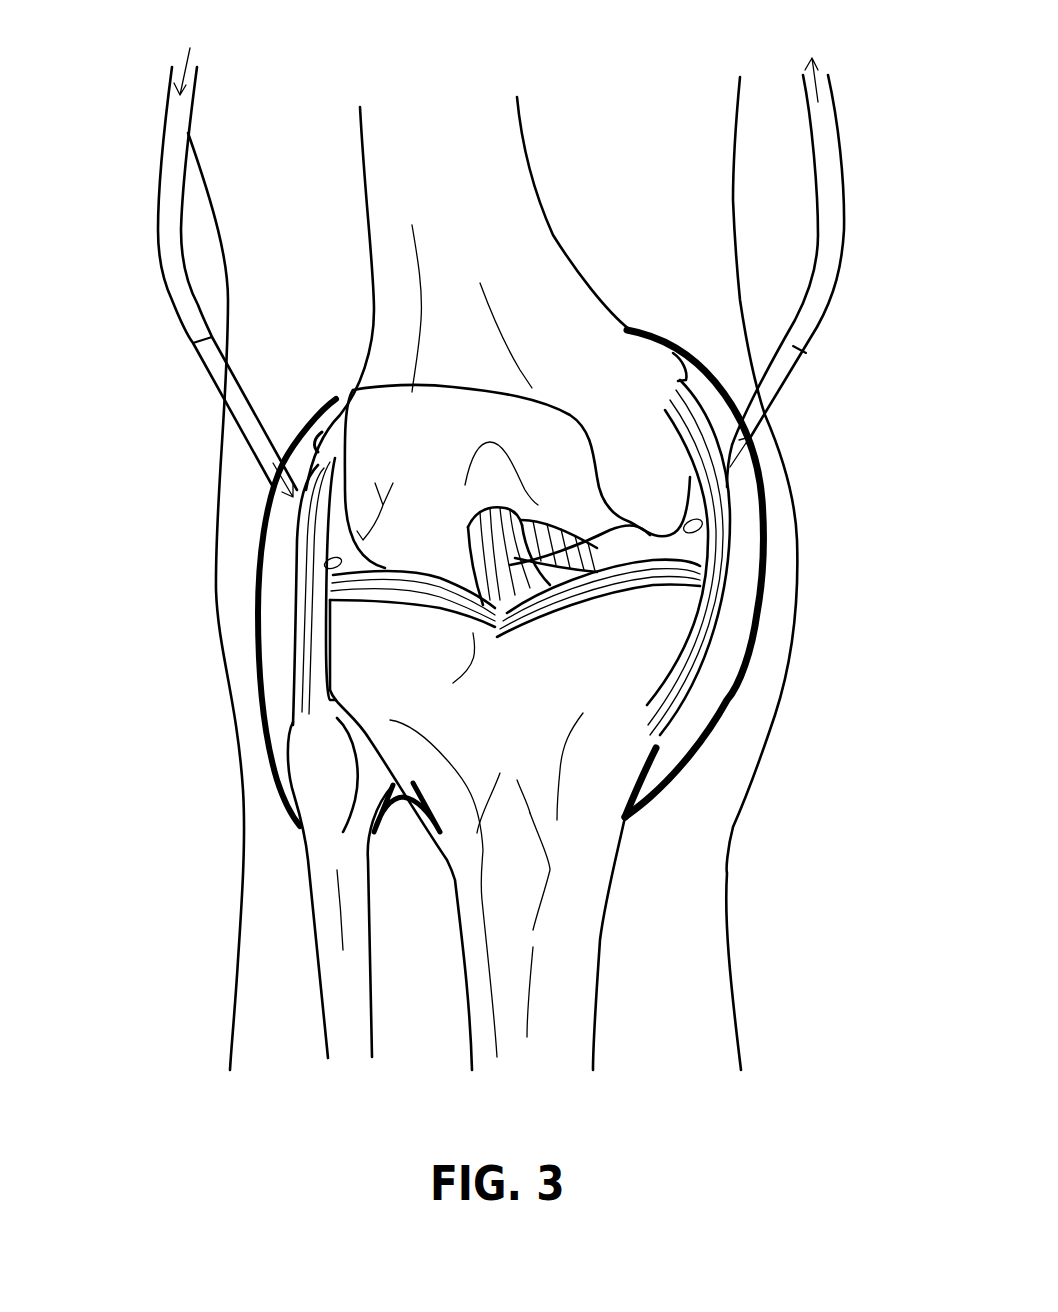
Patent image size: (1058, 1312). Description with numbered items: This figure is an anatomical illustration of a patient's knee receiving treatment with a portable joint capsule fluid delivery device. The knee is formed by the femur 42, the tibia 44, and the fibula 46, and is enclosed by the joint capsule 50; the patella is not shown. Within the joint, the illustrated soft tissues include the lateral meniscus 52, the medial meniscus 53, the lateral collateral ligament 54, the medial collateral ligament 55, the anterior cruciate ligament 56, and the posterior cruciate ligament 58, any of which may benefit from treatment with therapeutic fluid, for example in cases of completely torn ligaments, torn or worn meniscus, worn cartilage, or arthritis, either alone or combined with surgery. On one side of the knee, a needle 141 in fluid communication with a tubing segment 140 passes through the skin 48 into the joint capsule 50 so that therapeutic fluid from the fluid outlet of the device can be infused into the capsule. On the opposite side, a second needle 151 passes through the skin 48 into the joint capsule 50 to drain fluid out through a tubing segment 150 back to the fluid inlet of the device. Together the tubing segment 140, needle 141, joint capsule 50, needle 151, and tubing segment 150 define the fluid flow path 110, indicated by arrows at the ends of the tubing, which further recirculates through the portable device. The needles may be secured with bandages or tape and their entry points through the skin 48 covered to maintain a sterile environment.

The femur 42 is at (513, 260).
The tibia 44 is at (600, 800).
The fibula 46 is at (323, 893).
The skin 48 is at (222, 465).
The joint capsule 50 is at (260, 670).
The lateral meniscus 52 is at (442, 592).
The medial meniscus 53 is at (627, 580).
The lateral collateral ligament 54 is at (300, 587).
The medial collateral ligament 55 is at (700, 633).
The anterior cruciate ligament 56 is at (487, 513).
The posterior cruciate ligament 58 is at (533, 523).
The fluid flow path 110 is at (506, 256).
The tubing segment 140 is at (165, 242).
The needle 141 is at (222, 397).
The tubing segment 150 is at (920, 257).
The needle 151 is at (777, 403).